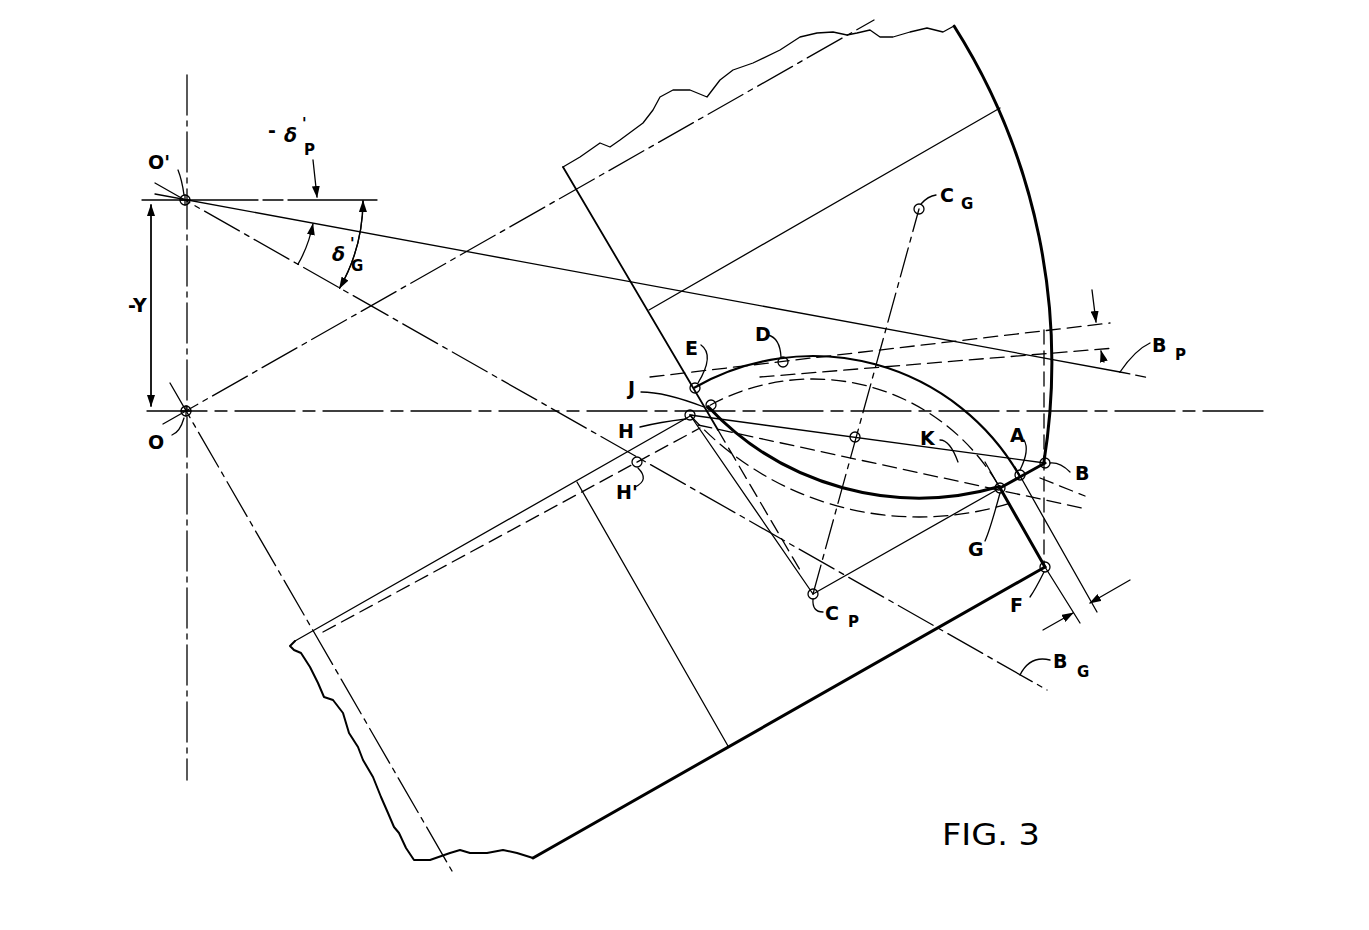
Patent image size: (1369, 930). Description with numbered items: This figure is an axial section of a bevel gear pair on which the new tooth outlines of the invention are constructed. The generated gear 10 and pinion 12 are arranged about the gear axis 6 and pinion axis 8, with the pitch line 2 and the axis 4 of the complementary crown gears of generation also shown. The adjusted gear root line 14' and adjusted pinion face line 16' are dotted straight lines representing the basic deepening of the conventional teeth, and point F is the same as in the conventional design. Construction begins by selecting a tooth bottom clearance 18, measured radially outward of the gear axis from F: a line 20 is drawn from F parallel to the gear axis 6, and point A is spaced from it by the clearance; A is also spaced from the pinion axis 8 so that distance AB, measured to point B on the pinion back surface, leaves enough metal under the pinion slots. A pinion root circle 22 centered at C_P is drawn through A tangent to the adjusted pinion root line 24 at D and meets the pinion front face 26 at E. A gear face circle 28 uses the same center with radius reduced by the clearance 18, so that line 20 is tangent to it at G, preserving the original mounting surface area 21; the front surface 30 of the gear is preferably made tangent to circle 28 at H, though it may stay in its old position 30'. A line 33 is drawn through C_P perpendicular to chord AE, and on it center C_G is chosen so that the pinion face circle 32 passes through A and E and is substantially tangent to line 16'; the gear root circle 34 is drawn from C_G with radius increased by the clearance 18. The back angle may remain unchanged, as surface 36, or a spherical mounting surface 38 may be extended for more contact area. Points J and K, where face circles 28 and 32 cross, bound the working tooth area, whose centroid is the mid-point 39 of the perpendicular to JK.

The pitch line 2 is at (1070, 414).
The axis of the complementary crown gears of generation 4 is at (188, 750).
The gear axis 6 is at (356, 702).
The pinion axis 8 is at (603, 176).
The generated gear 10 is at (650, 770).
The pinion 12 is at (707, 97).
The adjusted gear root line 14' is at (765, 500).
The adjusted pinion face line 16' is at (650, 315).
The tooth bottom clearance 18 is at (1194, 460).
The line parallel to the gear axis 20 is at (1043, 515).
The mounting surface area 21 is at (877, 667).
The pinion root circle 22 is at (940, 392).
The adjusted pinion root line 24 is at (988, 333).
The pinion front face 26 is at (632, 289).
The gear face circle 28 is at (850, 385).
The front surface of the gear 30 is at (493, 528).
The old position of the gear front surface 30' is at (511, 530).
The pinion face circle 32 is at (757, 443).
The line perpendicular to chord AE 33 is at (905, 262).
The gear root circle 34 is at (913, 518).
The back angle surface 36 is at (1046, 378).
The spherical mounting surface 38 is at (1020, 158).
The centroid of the working tooth area 39 is at (857, 444).